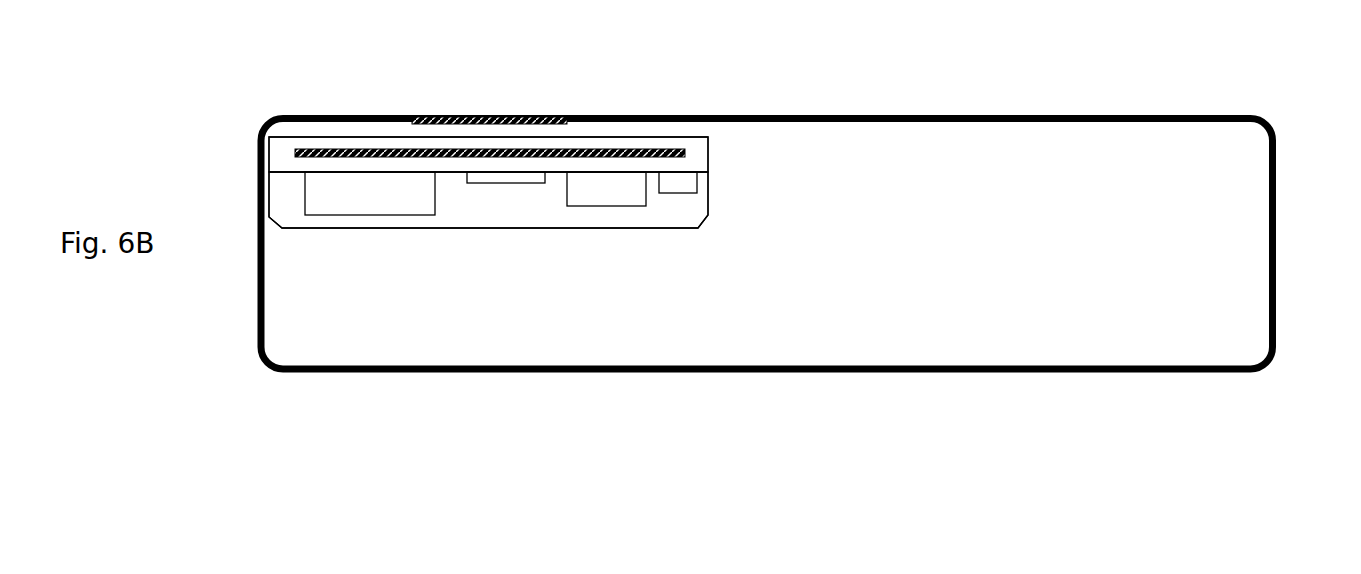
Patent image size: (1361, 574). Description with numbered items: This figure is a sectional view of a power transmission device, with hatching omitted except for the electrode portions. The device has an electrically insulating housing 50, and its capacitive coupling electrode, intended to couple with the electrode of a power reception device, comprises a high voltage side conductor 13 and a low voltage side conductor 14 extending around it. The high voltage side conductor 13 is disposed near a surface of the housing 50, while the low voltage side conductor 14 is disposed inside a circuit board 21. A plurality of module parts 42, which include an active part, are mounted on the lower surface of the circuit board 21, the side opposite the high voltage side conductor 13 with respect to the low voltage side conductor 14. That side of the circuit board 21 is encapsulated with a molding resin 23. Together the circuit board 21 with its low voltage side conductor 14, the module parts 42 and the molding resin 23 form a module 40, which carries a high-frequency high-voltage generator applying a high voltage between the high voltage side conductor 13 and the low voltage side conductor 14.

The high voltage side conductor 13 is at (493, 117).
The low voltage side conductor 14 is at (607, 150).
The circuit board 21 is at (698, 148).
The molding resin 23 is at (692, 222).
The module 40 is at (710, 137).
The module parts 42 is at (508, 183).
The housing 50 is at (1277, 236).